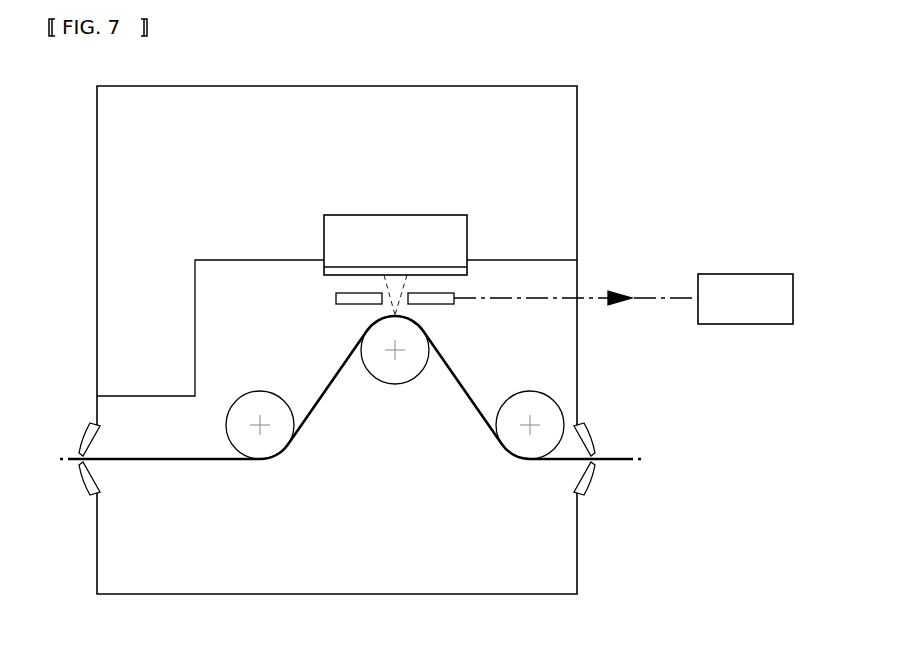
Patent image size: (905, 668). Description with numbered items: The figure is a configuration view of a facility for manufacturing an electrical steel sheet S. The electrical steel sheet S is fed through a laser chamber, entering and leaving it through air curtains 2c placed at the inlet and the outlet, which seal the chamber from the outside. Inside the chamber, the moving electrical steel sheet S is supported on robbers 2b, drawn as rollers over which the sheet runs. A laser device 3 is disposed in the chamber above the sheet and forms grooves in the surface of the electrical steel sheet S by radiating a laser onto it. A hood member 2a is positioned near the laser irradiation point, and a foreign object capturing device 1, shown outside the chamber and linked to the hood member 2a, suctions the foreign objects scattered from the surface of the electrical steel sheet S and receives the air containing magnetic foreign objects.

The foreign object capturing device 1 is at (765, 320).
The laser device 3 is at (458, 235).
The hood member 2a is at (353, 298).
The robbers 2b is at (275, 440).
The air curtains 2c is at (583, 478).
The electrical steel sheet S is at (213, 460).